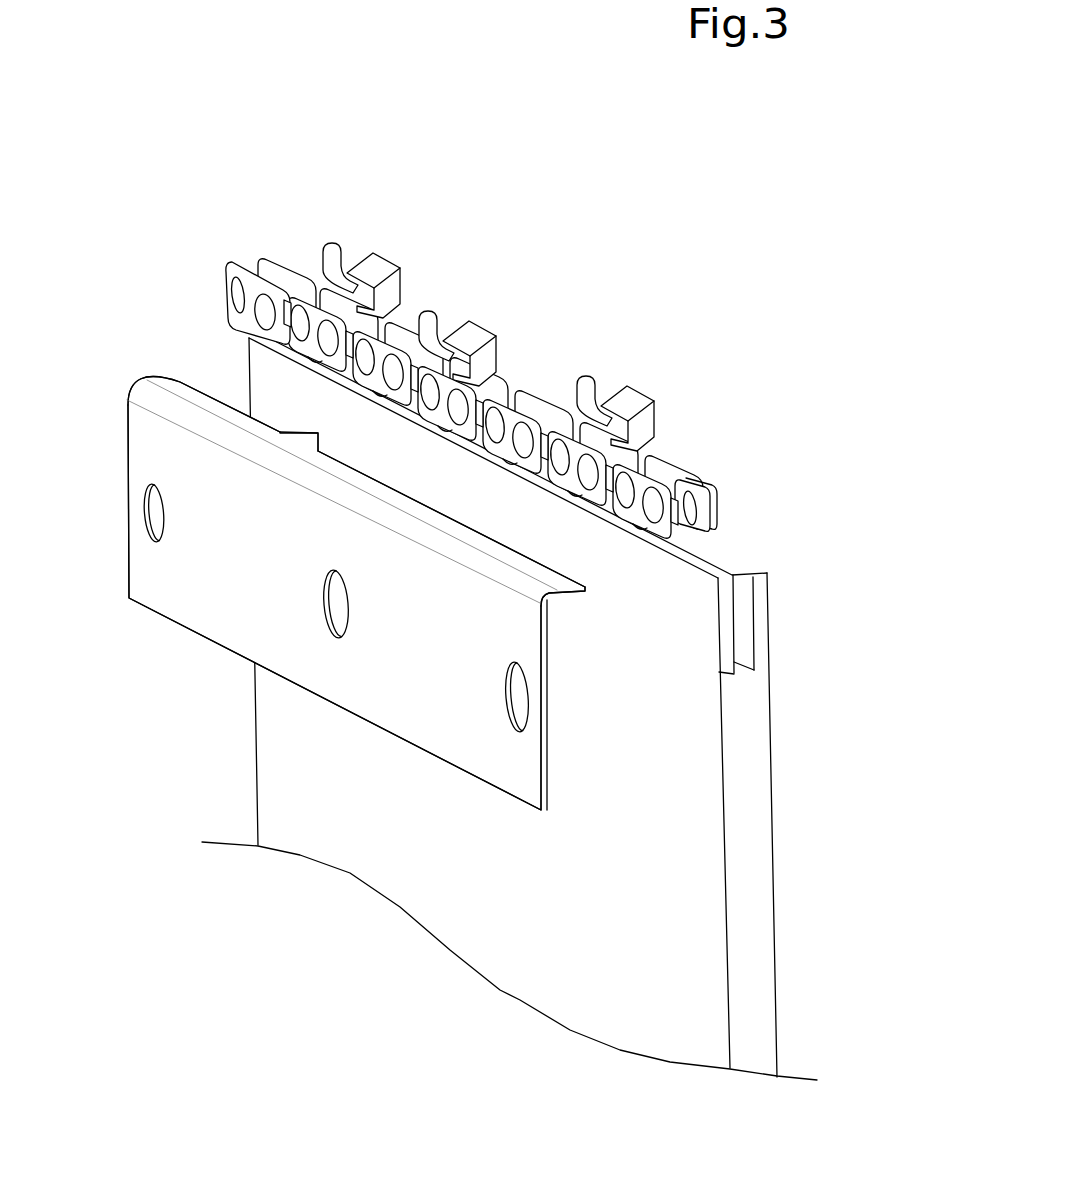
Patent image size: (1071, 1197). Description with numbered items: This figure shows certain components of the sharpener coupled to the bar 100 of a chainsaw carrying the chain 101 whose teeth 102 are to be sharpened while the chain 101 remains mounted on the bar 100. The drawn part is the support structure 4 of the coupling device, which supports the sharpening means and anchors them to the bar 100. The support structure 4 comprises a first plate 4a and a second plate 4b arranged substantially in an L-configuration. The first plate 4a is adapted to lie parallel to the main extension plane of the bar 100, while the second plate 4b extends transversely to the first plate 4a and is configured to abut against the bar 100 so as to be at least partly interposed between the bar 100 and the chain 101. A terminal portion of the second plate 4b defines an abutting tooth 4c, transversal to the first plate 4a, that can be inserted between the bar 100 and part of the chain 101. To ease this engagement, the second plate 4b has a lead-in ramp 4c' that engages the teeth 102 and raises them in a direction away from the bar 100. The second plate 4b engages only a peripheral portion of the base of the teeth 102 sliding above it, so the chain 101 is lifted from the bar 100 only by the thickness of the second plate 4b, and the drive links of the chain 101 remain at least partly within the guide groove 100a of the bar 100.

The support structure 4 is at (163, 593).
The first plate 4a is at (225, 603).
The second plate 4b is at (174, 385).
The abutting tooth 4c is at (333, 493).
The lead-in ramp 4c' is at (528, 556).
The bar 100 is at (755, 823).
The guide groove 100a is at (743, 622).
The chain 101 is at (686, 457).
The teeth 102 is at (483, 327).